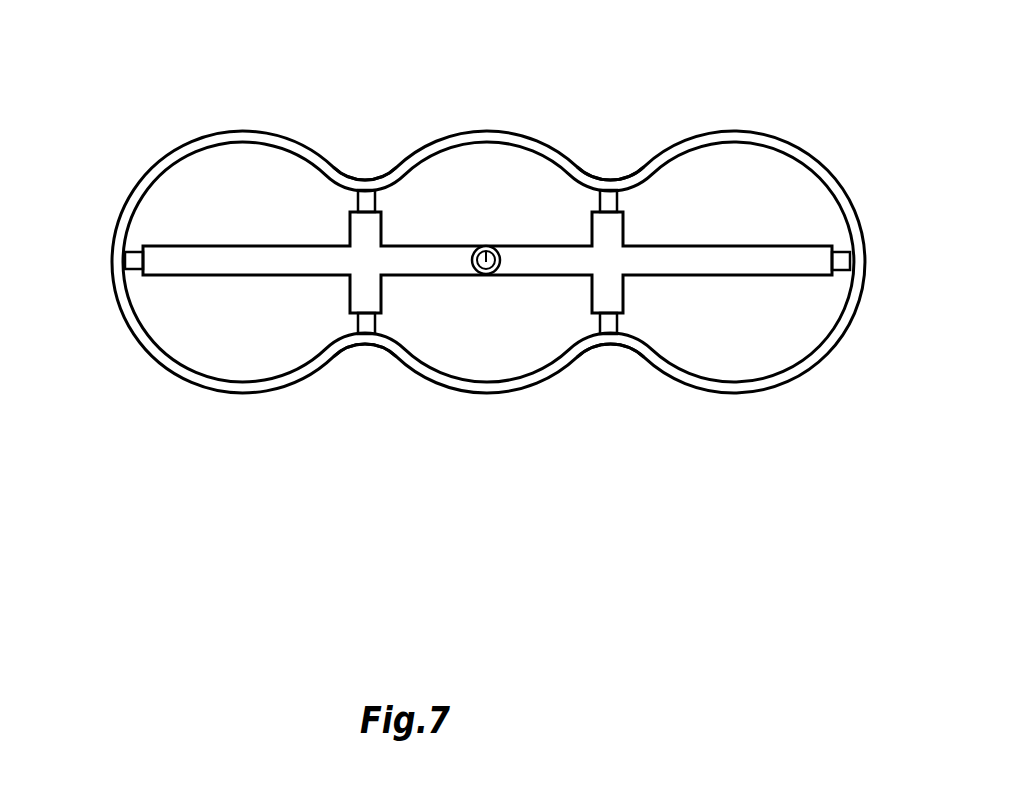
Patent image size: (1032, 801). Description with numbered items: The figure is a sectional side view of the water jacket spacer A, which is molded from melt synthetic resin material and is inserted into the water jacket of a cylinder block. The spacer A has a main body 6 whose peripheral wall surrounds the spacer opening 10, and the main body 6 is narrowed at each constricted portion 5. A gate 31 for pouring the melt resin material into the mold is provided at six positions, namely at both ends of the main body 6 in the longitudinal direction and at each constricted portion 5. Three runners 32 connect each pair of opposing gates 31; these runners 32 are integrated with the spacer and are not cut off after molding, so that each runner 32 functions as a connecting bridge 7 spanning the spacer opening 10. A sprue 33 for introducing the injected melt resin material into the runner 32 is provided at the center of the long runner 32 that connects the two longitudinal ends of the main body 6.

The spacer opening 10 is at (693, 180).
The water jacket spacer A is at (801, 138).
The main body 6 is at (172, 370).
The constricted portion 5 is at (365, 180).
The runner 32 is at (203, 262).
The connecting bridge 7 is at (487, 262).
The gate 31 is at (128, 255).
The sprue 33 is at (484, 247).